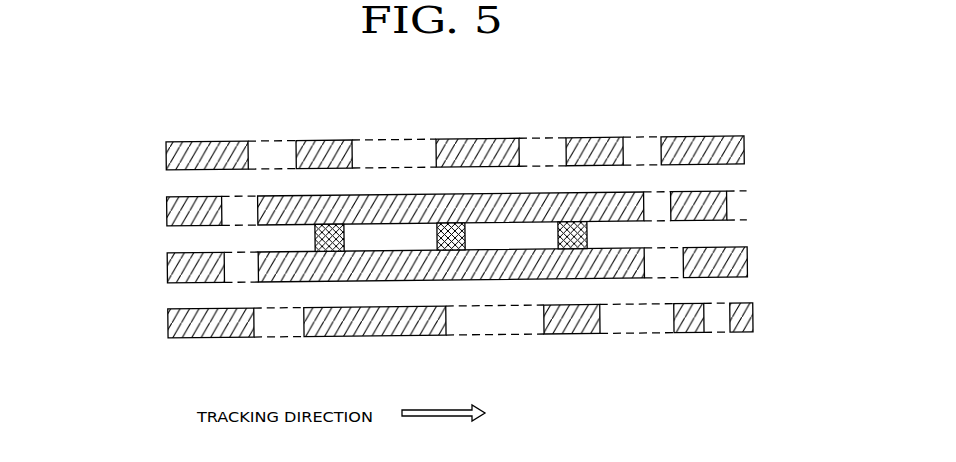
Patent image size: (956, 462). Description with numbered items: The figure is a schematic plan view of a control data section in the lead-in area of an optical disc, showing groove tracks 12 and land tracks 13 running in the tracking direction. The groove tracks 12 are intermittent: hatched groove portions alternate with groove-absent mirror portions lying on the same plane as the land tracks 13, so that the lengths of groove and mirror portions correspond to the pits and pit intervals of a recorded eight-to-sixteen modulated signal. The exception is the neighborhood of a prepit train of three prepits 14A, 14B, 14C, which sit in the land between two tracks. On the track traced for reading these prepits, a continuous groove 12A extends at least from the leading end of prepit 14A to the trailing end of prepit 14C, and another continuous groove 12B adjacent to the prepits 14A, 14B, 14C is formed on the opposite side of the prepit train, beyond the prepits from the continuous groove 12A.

The groove tracks 12 is at (396, 223).
The continuous groove 12A is at (456, 139).
The continuous groove 12B is at (457, 321).
The land tracks 13 is at (801, 235).
The prepit 14A is at (280, 237).
The prepit 14B is at (416, 236).
The prepit 14C is at (619, 235).